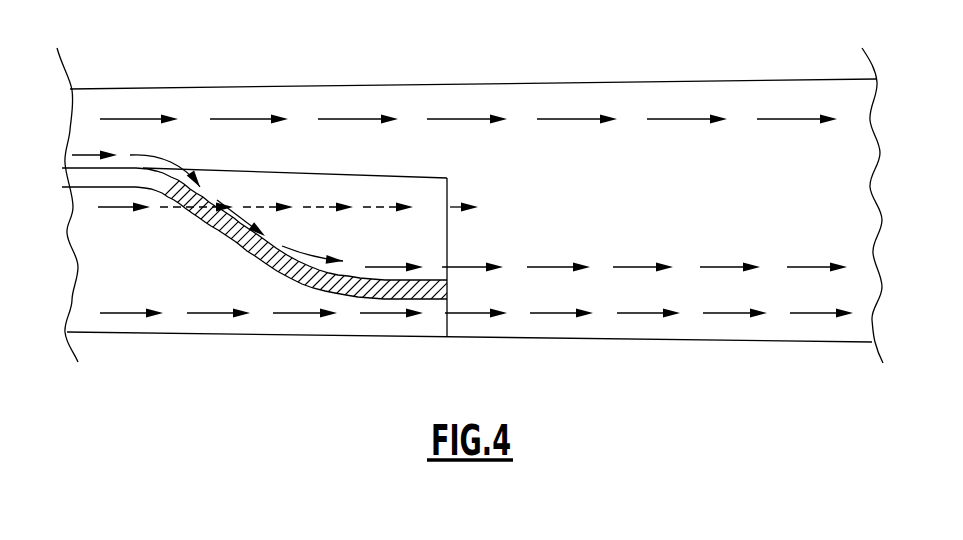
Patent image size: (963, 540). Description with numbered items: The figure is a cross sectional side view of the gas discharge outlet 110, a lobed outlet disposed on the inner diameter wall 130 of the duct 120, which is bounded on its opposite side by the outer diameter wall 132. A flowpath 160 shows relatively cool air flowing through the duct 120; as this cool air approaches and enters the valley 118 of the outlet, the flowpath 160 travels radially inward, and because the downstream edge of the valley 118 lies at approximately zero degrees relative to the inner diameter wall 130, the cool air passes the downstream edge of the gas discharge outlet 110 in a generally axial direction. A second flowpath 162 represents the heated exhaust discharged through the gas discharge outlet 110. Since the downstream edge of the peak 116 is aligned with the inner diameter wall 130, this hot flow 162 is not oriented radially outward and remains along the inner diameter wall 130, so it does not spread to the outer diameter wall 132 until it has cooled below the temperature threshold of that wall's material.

The gas discharge outlet 110 is at (305, 152).
The peak 116 is at (392, 177).
The valley 118 is at (412, 238).
The duct 120 is at (722, 192).
The inner diameter wall 130 is at (692, 340).
The outer diameter wall 132 is at (583, 82).
The flowpath 160 is at (127, 120).
The second flowpath 162 is at (110, 208).